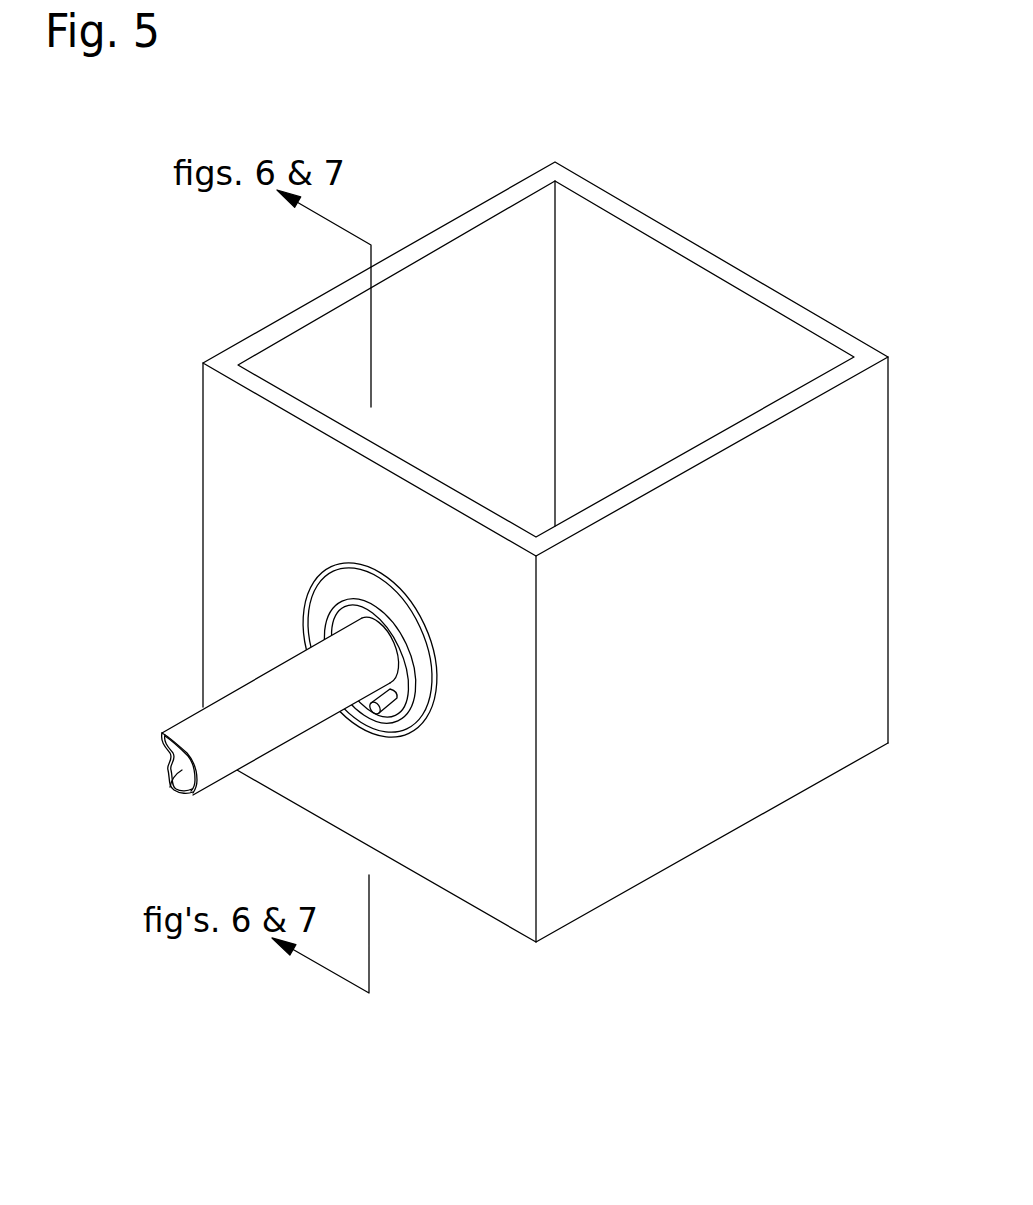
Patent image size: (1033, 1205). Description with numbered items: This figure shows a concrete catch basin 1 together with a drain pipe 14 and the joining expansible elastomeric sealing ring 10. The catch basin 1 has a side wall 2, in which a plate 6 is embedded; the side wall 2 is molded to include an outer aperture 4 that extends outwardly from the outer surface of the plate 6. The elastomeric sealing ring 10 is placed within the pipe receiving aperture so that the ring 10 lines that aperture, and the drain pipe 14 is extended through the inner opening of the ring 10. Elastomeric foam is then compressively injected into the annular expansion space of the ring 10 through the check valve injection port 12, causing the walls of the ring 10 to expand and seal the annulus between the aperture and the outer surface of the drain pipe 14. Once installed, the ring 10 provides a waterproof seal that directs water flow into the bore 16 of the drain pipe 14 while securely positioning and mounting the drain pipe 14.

The concrete catch basin 1 is at (477, 531).
The side wall 2 is at (262, 467).
The outer aperture 4 is at (305, 627).
The plate 6 is at (323, 585).
The expansible elastomeric sealing ring 10 is at (475, 725).
The check valve injection port 12 is at (370, 712).
The drain pipe 14 is at (232, 746).
The bore 16 is at (170, 787).